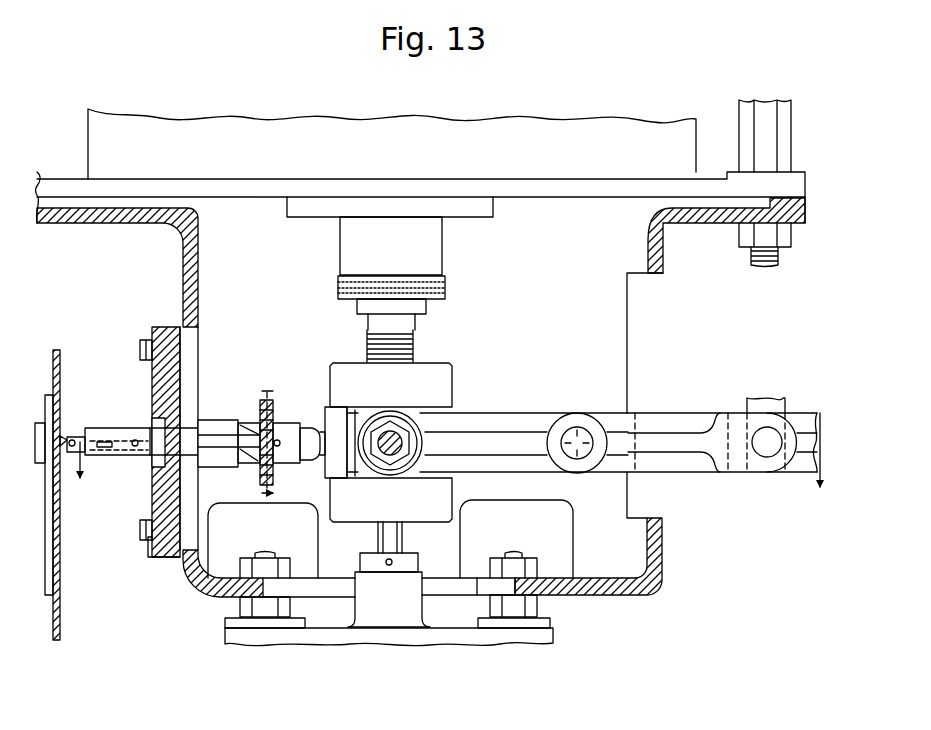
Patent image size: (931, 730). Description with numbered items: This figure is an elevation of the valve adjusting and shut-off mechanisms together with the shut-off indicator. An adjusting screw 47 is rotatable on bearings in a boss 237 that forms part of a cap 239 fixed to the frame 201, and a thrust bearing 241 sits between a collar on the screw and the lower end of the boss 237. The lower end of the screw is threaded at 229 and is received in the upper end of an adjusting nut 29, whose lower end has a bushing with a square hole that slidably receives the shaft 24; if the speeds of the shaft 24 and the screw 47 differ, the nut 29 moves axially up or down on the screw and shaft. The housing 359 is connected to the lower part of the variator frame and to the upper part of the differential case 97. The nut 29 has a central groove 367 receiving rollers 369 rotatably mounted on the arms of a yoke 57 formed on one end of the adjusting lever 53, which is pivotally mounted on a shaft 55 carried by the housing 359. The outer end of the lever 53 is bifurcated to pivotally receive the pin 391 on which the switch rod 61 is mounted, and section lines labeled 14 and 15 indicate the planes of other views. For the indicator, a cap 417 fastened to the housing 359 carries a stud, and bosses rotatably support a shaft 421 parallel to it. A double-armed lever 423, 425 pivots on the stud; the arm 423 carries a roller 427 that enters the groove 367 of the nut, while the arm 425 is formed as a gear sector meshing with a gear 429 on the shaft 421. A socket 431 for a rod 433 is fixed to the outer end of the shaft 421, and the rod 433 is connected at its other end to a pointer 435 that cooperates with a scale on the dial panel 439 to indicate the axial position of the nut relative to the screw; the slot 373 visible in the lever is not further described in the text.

The frame 201 is at (533, 130).
The cap 239 is at (493, 217).
The boss 237 is at (432, 260).
The thrust bearing 241 is at (447, 293).
The adjusting screw 47 is at (415, 322).
The threaded lower end 229 is at (413, 343).
The adjusting nut 29 is at (440, 380).
The roller 427 is at (330, 420).
The central groove 367 is at (450, 403).
The adjusting lever 53 is at (518, 422).
The shaft 55 is at (575, 433).
The yoke 57 is at (380, 463).
The rollers 369 is at (397, 477).
The shaft 24 is at (385, 539).
The differential case 97 is at (462, 633).
The housing 359 is at (187, 250).
The dial panel 439 is at (61, 354).
The cap 417 is at (175, 362).
The rod 433 is at (64, 438).
The socket 431 is at (104, 455).
The pointer 435 is at (48, 568).
The shaft 421 is at (208, 454).
The arm 425 is at (260, 403).
The gear 429 is at (276, 425).
The arm 423 is at (321, 466).
The slot 373 is at (657, 413).
The switch rod 61 is at (769, 398).
The pin 391 is at (767, 456).
The section line 14- 14 is at (282, 442).
The section line 15- 15 is at (448, 465).